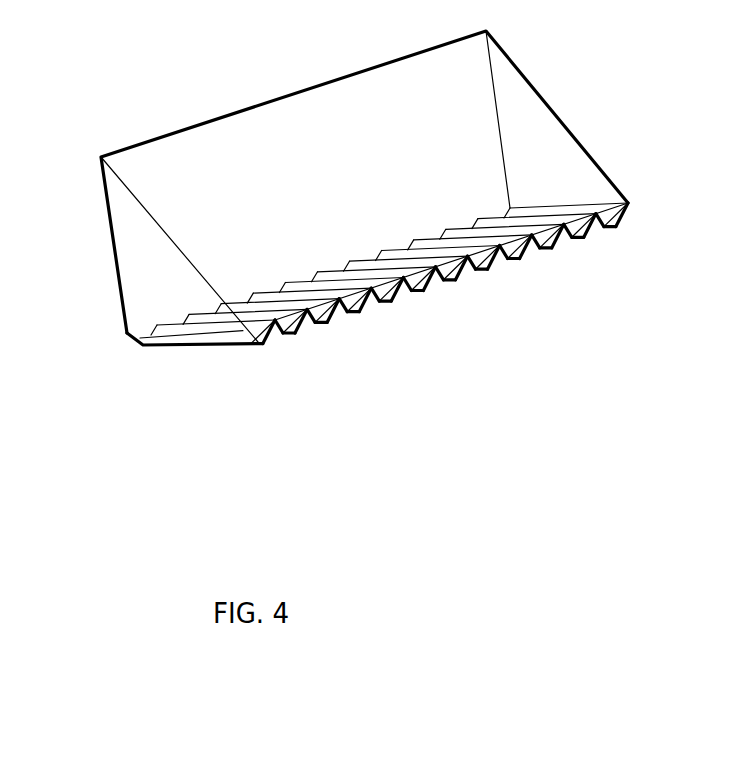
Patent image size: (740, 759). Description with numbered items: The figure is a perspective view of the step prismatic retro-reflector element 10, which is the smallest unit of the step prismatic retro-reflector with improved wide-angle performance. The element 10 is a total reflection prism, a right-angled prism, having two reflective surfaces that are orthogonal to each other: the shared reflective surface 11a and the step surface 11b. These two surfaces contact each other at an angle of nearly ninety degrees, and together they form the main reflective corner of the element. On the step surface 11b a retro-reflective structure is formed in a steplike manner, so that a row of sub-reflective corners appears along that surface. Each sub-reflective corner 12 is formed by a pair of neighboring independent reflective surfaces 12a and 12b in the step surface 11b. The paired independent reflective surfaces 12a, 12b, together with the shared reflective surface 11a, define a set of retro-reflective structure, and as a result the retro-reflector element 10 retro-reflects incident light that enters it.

The step prismatic retro-reflector element 10 is at (325, 206).
The shared reflective surface 11a is at (143, 228).
The step surface 11b is at (423, 283).
The sub-reflective corner 12 is at (439, 308).
The independent reflective surface 12a is at (299, 327).
The independent reflective surface 12b is at (278, 329).